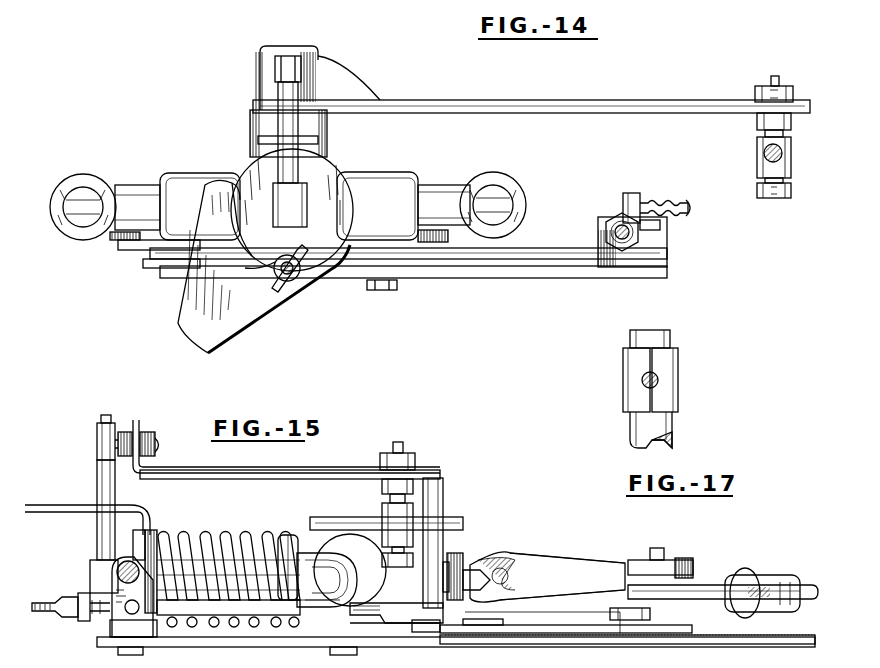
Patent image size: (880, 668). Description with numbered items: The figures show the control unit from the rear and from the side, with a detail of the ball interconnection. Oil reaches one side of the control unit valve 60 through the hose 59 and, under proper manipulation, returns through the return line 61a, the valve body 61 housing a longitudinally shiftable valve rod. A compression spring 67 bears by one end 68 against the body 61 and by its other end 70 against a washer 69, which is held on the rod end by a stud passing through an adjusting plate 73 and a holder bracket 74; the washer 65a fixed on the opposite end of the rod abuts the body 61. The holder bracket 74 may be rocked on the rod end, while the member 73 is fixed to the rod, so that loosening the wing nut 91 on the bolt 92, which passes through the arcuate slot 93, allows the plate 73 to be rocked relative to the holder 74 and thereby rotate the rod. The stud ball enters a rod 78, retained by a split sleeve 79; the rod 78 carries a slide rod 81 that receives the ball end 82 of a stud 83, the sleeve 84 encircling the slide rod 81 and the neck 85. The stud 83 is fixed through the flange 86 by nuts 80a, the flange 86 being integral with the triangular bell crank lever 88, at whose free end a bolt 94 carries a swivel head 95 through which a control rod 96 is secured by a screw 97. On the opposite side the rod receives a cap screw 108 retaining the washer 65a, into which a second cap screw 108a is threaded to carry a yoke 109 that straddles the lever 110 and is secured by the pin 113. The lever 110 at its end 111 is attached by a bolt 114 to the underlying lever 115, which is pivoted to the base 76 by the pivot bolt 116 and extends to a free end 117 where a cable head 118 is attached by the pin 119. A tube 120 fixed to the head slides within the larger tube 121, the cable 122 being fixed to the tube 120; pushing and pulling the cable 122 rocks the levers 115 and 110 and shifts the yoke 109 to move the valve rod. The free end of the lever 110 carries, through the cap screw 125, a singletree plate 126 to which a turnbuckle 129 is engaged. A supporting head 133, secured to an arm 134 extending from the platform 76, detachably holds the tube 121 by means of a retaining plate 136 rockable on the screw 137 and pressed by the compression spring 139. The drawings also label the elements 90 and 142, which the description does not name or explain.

In FIG. 14, the hose 59 is at (448, 198).
In FIG. 14, the control unit valve 60 is at (190, 162).
In FIG. 15, the control unit valve 60 is at (446, 509).
In FIG. 14, the valve body 61 is at (362, 180).
In FIG. 15, the valve body 61 is at (300, 553).
In FIG. 14, the return line 61a is at (122, 195).
In FIG. 15, the washer 65a is at (452, 556).
In FIG. 15, the compression spring 67 is at (210, 520).
In FIG. 15, the spring end 68 is at (287, 530).
In FIG. 15, the washer 69 is at (150, 520).
In FIG. 15, the spring end 70 is at (165, 520).
In FIG. 14, the adjusting plate 73 is at (201, 342).
In FIG. 14, the holder bracket 74 is at (262, 142).
In FIG. 15, the holder bracket 74 is at (55, 505).
In FIG. 14, the base 76 is at (160, 268).
In FIG. 15, the base 76 is at (720, 645).
In FIG. 14, the rod 78 is at (285, 100).
In FIG. 15, the rod 78 is at (100, 480).
In FIG. 14, the split sleeve 79 is at (285, 205).
In FIG. 15, the split sleeve 79 is at (92, 578).
In FIG. 15, the nuts 80a is at (125, 432).
In FIG. 14, the slide rod 81 is at (288, 56).
In FIG. 17, the slide rod 81 is at (642, 422).
In FIG. 15, the slide rod 81 is at (108, 415).
In FIG. 17, the ball end 82 is at (650, 372).
In FIG. 15, the stud 83 is at (160, 445).
In FIG. 14, the sleeve 84 is at (290, 70).
In FIG. 17, the sleeve 84 is at (632, 365).
In FIG. 15, the sleeve 84 is at (97, 440).
In FIG. 17, the neck 85 is at (642, 381).
In FIG. 14, the flange 86 is at (335, 82).
In FIG. 15, the flange 86 is at (140, 420).
In FIG. 14, the bell crank lever 88 is at (520, 100).
In FIG. 15, the bell crank lever 88 is at (296, 470).
In FIG. 15, the upright post 90 is at (440, 488).
In FIG. 14, the wing nut 91 is at (280, 296).
In FIG. 14, the bolt 92 is at (285, 254).
In FIG. 14, the arcuate slot 93 is at (225, 207).
In FIG. 14, the bolt 94 is at (776, 76).
In FIG. 15, the bolt 94 is at (398, 442).
In FIG. 14, the swivel head 95 is at (782, 146).
In FIG. 15, the swivel head 95 is at (395, 522).
In FIG. 14, the control rod 96 is at (764, 155).
In FIG. 15, the control rod 96 is at (455, 528).
In FIG. 14, the screw 97 is at (768, 200).
In FIG. 15, the screw 97 is at (398, 568).
In FIG. 15, the cap screw 108 is at (472, 605).
In FIG. 15, the second cap screw 108a is at (496, 578).
In FIG. 15, the yoke 109 is at (587, 562).
In FIG. 14, the lever 110 is at (130, 242).
In FIG. 15, the lever 110 is at (700, 585).
In FIG. 14, the lever end 111 is at (118, 245).
In FIG. 15, the pin 113 is at (657, 548).
In FIG. 14, the bolt 114 is at (152, 226).
In FIG. 14, the underlying lever 115 is at (548, 255).
In FIG. 15, the underlying lever 115 is at (668, 628).
In FIG. 15, the pivot bolt 116 is at (622, 608).
In FIG. 15, the free end 117 is at (422, 632).
In FIG. 15, the cable head 118 is at (405, 625).
In FIG. 15, the pin 119 is at (430, 600).
In FIG. 15, the tube 120 is at (338, 600).
In FIG. 14, the larger tube 121 is at (622, 222).
In FIG. 15, the larger tube 121 is at (297, 603).
In FIG. 14, the cable 122 is at (610, 227).
In FIG. 15, the cable 122 is at (46, 603).
In FIG. 14, the cap screw 125 is at (428, 225).
In FIG. 15, the cap screw 125 is at (683, 558).
In FIG. 15, the plate 126 is at (728, 600).
In FIG. 15, the turnbuckle 129 is at (785, 585).
In FIG. 14, the supporting head 133 is at (627, 193).
In FIG. 15, the supporting head 133 is at (118, 630).
In FIG. 14, the arm 134 is at (530, 278).
In FIG. 15, the arm 134 is at (275, 645).
In FIG. 14, the retaining plate 136 is at (645, 228).
In FIG. 15, the retaining plate 136 is at (118, 568).
In FIG. 14, the screw 137 is at (686, 213).
In FIG. 14, the compression spring 139 is at (658, 205).
In FIG. 15, the strip 142 is at (585, 630).